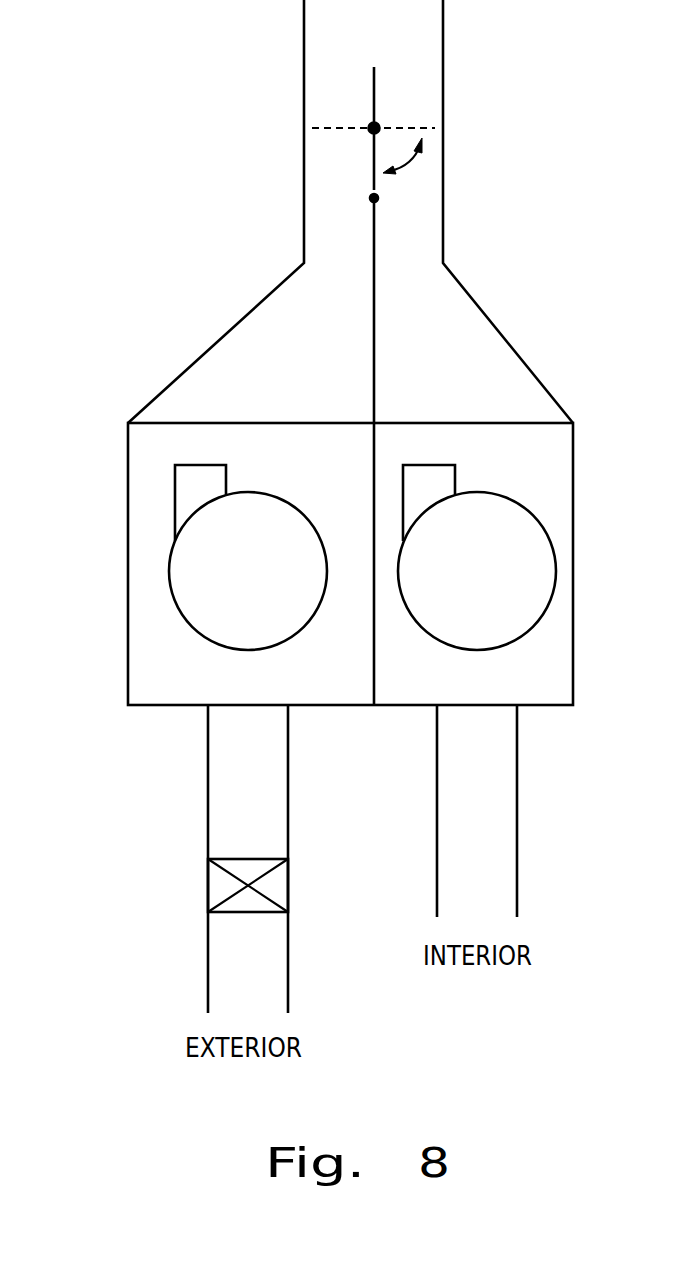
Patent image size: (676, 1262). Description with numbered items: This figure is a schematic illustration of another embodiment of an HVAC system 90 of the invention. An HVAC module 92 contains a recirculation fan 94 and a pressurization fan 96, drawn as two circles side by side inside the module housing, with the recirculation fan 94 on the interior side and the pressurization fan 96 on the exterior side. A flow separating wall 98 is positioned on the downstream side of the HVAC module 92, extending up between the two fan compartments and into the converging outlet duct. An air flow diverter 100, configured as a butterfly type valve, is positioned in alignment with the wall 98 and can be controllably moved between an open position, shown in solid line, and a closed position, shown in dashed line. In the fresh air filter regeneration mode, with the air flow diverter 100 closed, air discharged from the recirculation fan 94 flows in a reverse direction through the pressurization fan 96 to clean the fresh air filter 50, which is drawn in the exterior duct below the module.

The fresh air filter 50 is at (208, 886).
The HVAC system 90 is at (132, 312).
The HVAC module 92 is at (128, 673).
The recirculation fan 94 is at (540, 520).
The pressurization fan 96 is at (168, 567).
The flow separating wall 98 is at (374, 340).
The air flow diverter 100 is at (376, 99).